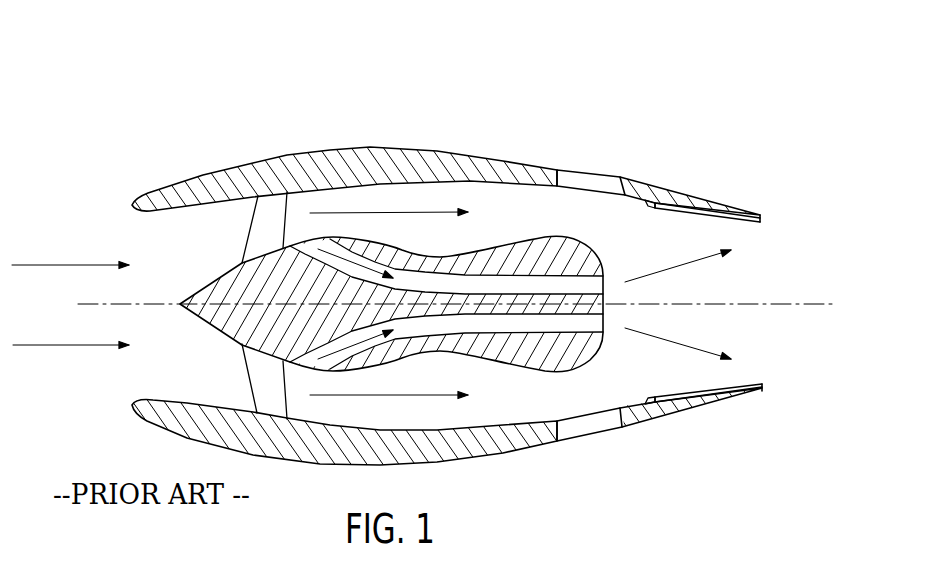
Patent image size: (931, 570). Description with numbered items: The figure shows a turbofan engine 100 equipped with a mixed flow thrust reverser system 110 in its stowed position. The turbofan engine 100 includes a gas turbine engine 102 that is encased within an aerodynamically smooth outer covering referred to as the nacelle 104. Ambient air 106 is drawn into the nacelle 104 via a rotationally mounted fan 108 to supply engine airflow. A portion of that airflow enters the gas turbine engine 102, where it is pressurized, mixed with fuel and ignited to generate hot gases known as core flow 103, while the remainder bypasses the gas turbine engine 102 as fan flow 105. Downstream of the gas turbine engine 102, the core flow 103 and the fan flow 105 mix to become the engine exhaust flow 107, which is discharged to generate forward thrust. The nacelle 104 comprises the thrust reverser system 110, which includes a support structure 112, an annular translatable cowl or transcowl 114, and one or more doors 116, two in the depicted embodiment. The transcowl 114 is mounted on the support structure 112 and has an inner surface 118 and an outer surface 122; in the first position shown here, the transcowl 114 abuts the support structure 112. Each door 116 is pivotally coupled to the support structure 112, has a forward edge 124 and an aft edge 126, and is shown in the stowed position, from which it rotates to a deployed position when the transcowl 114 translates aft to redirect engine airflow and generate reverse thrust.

The turbofan engine 100 is at (450, 100).
The gas turbine engine 102 is at (505, 248).
The core flow 103 is at (390, 262).
The nacelle 104 is at (182, 174).
The fan flow 105 is at (402, 209).
The ambient air 106 is at (80, 263).
The engine exhaust flow 107 is at (680, 263).
The fan 108 is at (273, 200).
The mixed flow thrust reverser system 110 is at (792, 161).
The support structure 112 is at (593, 177).
The transcowl 114 is at (705, 196).
The door 116 is at (712, 222).
The inner surface 118 is at (628, 413).
The outer surface 122 is at (743, 408).
The forward edge 124 is at (655, 204).
The aft edge 126 is at (757, 220).